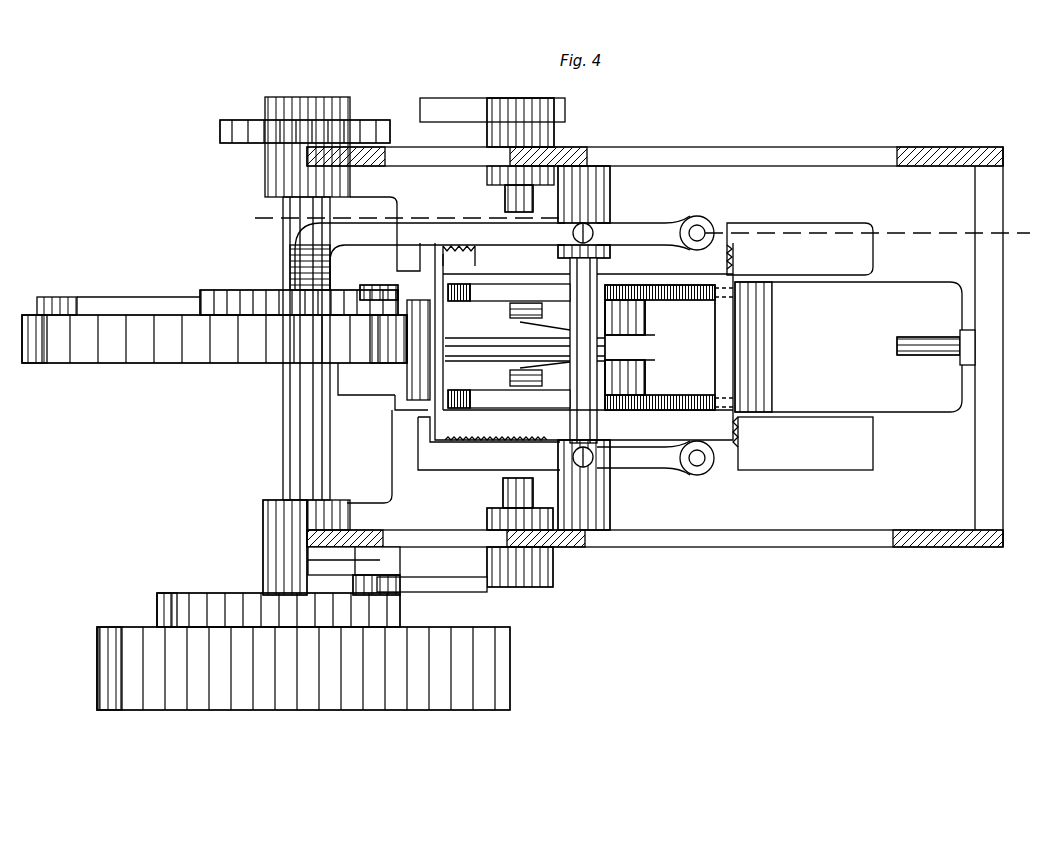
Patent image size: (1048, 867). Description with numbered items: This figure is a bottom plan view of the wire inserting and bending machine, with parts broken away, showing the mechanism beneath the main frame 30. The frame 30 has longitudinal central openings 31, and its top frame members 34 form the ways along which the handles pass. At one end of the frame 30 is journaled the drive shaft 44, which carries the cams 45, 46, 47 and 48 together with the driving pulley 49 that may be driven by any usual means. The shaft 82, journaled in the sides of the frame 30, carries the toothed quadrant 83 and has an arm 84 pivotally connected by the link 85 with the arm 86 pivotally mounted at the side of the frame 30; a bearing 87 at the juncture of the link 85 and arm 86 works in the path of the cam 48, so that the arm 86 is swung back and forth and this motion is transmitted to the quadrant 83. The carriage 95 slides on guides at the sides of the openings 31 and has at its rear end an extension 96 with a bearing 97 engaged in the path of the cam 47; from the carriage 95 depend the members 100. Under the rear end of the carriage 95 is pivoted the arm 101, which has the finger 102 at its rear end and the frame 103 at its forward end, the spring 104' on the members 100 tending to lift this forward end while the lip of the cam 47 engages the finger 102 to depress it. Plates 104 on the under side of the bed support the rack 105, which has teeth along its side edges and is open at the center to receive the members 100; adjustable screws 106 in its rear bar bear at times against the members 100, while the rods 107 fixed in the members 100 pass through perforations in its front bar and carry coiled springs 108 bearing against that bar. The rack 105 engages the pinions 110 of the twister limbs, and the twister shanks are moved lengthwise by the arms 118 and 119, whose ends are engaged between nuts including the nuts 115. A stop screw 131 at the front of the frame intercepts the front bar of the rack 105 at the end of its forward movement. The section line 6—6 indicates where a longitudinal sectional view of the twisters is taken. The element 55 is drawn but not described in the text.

The main frame 30 is at (825, 530).
The longitudinal central openings 31 is at (910, 412).
The top frame members 34 is at (778, 165).
The drive shaft 44 is at (283, 428).
The cam 45 is at (220, 127).
The cam 46 is at (247, 298).
The cam 47 is at (160, 360).
The cam 48 is at (208, 600).
The driving pulley 49 is at (135, 635).
The hub 55 is at (275, 552).
The shaft 82 is at (505, 193).
The quadrant 83 is at (460, 108).
The arm 84 is at (487, 565).
The link 85 is at (485, 592).
The arm 86 is at (400, 565).
The bearing 87 is at (400, 592).
The carriage 95 is at (405, 408).
The extension 96 is at (380, 400).
The bearing 97 is at (356, 388).
The members 100 is at (492, 290).
The arm 101 is at (472, 340).
The finger 102 is at (400, 296).
The frame 103 is at (704, 338).
The plates 104 is at (581, 359).
The spring 104' is at (540, 344).
The rack 105 is at (448, 256).
The adjustable screws 106 is at (458, 301).
The rods 107 is at (660, 300).
The coiled springs 108 is at (676, 292).
The pinions 110 is at (715, 238).
The nuts 115 is at (705, 222).
The arm 118 is at (636, 225).
The arm 119 is at (650, 468).
The stop screw 131 is at (912, 355).
The section line 6 is at (261, 243).